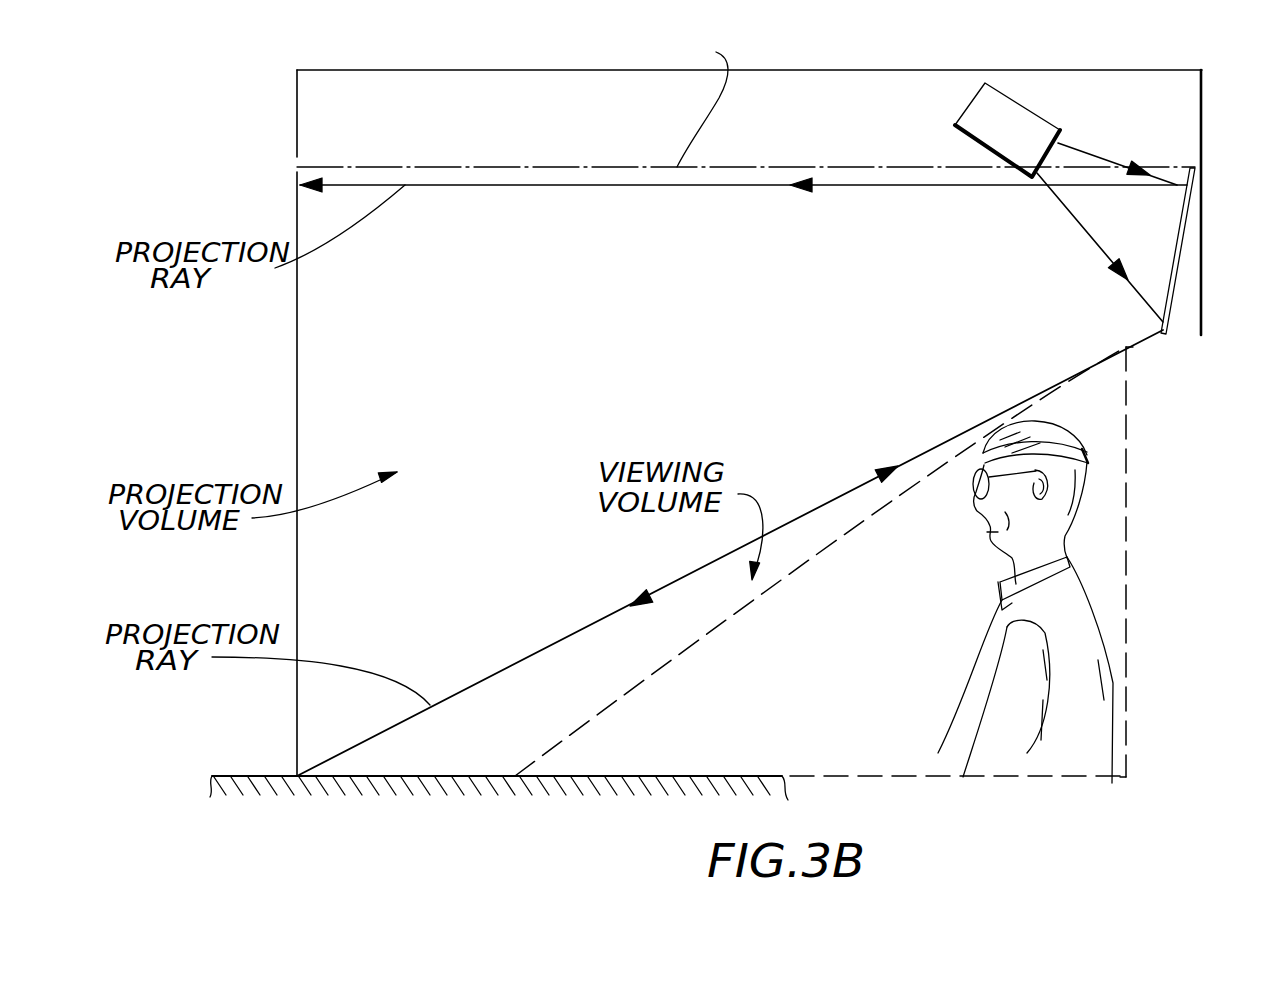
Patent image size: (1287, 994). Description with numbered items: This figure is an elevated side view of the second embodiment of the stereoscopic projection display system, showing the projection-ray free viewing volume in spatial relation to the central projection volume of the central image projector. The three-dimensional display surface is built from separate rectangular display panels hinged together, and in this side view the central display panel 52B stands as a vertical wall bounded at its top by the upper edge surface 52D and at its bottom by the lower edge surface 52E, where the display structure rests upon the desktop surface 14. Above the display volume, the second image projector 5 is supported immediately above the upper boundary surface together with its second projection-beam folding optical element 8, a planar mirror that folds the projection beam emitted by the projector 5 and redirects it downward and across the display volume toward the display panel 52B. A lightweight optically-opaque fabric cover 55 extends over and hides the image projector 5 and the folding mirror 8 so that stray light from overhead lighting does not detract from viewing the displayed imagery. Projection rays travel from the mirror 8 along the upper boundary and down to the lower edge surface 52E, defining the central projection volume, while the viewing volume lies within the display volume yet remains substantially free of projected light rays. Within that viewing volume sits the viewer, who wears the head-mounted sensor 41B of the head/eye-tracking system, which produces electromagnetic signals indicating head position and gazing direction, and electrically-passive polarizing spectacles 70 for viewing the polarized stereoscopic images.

The fabric cover 55 is at (832, 71).
The second image projector 5 is at (1005, 110).
The second projection-beam folding optical element 8 is at (1182, 252).
The central display panel 52B is at (297, 354).
The upper edge surface 52D is at (297, 167).
The lower edge surface 52E is at (296, 777).
The desktop surface 14 is at (258, 773).
The head-mounted sensor 41B is at (1082, 452).
The polarizing spectacles 70 is at (975, 488).